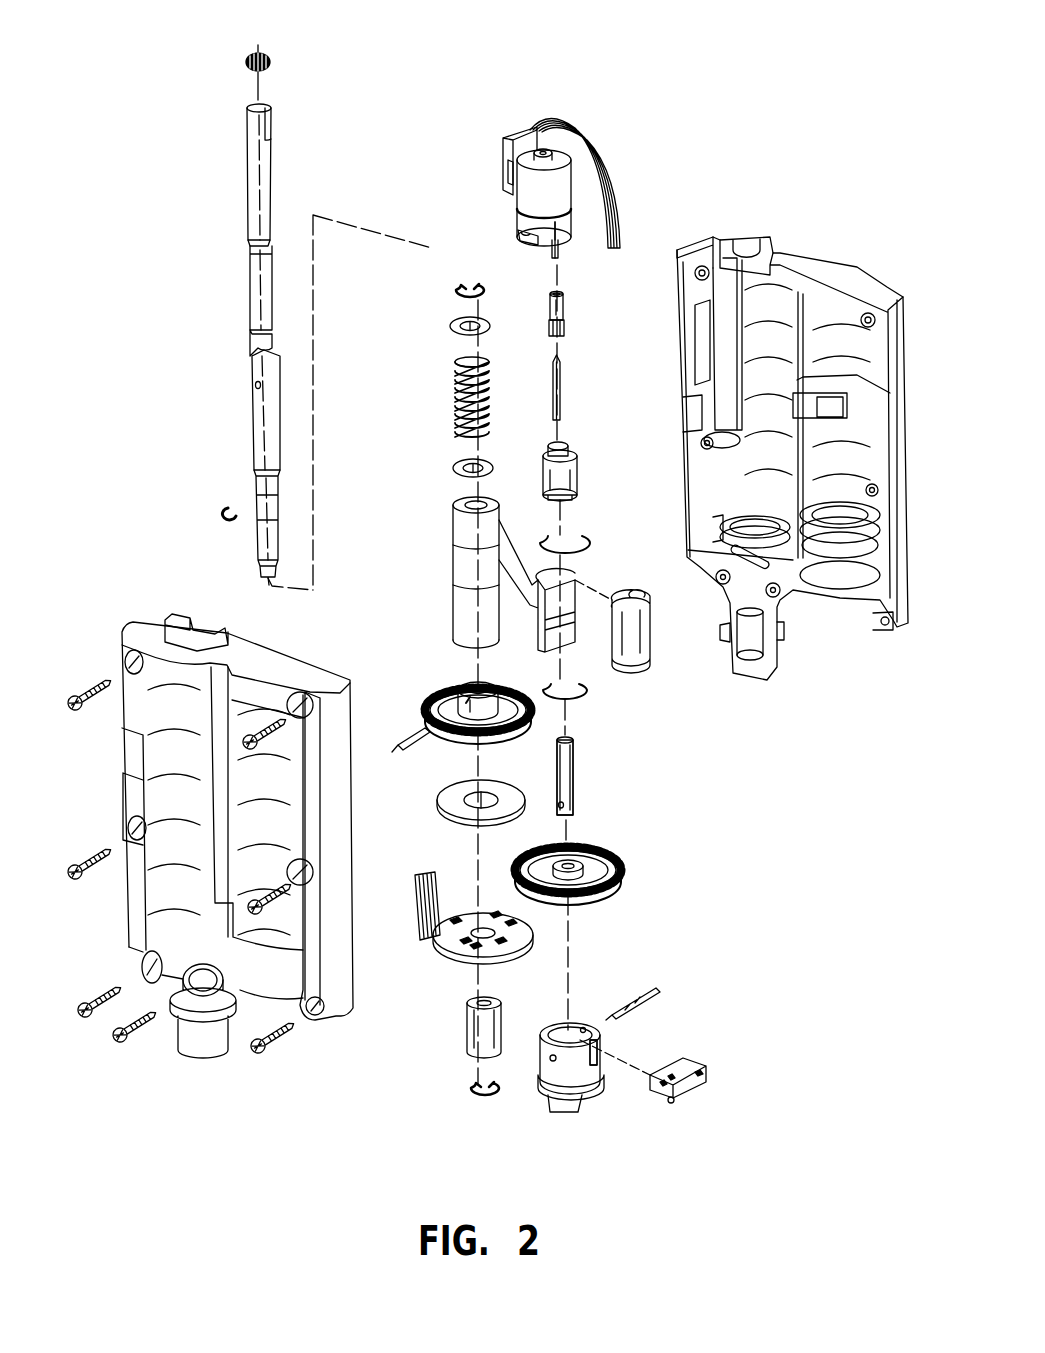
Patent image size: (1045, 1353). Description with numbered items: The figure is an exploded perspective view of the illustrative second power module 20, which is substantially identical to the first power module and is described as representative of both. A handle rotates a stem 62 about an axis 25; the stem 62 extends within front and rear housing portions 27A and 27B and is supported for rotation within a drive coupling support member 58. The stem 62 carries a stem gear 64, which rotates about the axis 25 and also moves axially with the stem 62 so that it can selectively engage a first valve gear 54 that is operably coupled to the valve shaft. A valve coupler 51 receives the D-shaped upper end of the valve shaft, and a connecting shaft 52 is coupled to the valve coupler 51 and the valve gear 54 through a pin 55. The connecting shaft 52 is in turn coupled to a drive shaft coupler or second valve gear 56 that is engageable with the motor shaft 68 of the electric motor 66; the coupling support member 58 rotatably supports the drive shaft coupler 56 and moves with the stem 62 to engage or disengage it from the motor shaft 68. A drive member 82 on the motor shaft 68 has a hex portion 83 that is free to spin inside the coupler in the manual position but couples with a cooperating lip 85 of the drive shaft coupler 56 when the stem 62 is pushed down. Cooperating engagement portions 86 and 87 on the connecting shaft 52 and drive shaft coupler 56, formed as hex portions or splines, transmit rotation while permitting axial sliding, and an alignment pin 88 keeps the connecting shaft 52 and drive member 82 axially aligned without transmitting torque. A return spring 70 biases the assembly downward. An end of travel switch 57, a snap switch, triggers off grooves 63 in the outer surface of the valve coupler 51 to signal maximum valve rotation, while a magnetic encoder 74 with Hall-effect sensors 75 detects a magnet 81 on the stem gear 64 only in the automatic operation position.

The second power module 20 is at (778, 138).
The axis 25 is at (275, 85).
The front housing portion 27A is at (140, 632).
The rear housing portion 27B is at (860, 280).
The valve coupler 51 is at (595, 1085).
The connecting shaft 52 is at (572, 790).
The first valve gear 54 is at (622, 869).
The pin 55 is at (660, 982).
The drive shaft coupler 56 is at (577, 474).
The end of travel switch 57 is at (697, 1080).
The drive coupling support member 58 is at (455, 558).
The stem 62 is at (245, 180).
The grooves 63 is at (543, 1035).
The stem gear 64 is at (430, 700).
The electric motor 66 is at (530, 187).
The motor shaft 68 is at (560, 247).
The return spring 70 is at (455, 388).
The magnetic encoder 74 is at (440, 940).
The Hall-effect sensors 75 is at (480, 945).
The magnet 81 is at (440, 810).
The drive member 82 is at (563, 292).
The hex portion 83 is at (565, 331).
The lip 85 is at (568, 453).
The engagement portion 86 is at (573, 753).
The engagement portion 87 is at (572, 508).
The alignment pin 88 is at (561, 370).